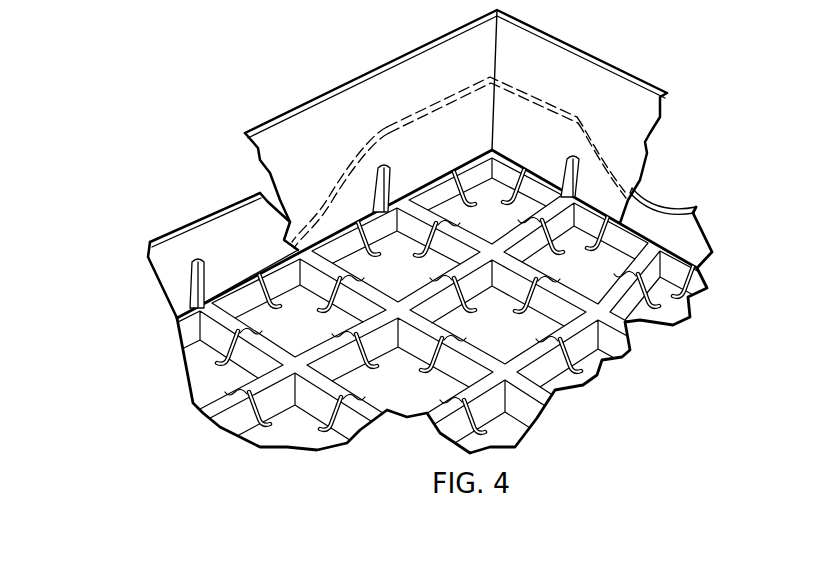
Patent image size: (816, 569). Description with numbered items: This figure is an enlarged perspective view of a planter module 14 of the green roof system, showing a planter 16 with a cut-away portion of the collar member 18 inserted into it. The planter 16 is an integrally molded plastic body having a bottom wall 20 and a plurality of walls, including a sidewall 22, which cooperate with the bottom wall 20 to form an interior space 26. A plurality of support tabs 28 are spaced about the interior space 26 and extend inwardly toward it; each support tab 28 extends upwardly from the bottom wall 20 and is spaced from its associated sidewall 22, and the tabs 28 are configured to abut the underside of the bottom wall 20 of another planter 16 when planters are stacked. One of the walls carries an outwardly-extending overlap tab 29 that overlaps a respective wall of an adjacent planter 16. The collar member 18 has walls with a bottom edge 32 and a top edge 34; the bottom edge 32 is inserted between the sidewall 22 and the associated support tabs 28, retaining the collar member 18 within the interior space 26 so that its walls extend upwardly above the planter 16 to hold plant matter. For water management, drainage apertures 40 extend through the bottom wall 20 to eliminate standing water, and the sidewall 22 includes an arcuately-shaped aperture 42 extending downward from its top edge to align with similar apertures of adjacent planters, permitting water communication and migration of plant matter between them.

The planter module 14 is at (140, 138).
The planter 16 is at (234, 182).
The collar member 18 is at (258, 108).
The bottom wall 20 is at (212, 292).
The sidewall 22 is at (245, 240).
The interior space 26 is at (216, 242).
The support tab 28 is at (190, 293).
The overlap tab 29 is at (150, 240).
The bottom edge 32 is at (422, 360).
The top edge 34 is at (312, 97).
The drainage aperture 40 is at (262, 288).
The arcuately-shaped aperture 42 is at (270, 200).